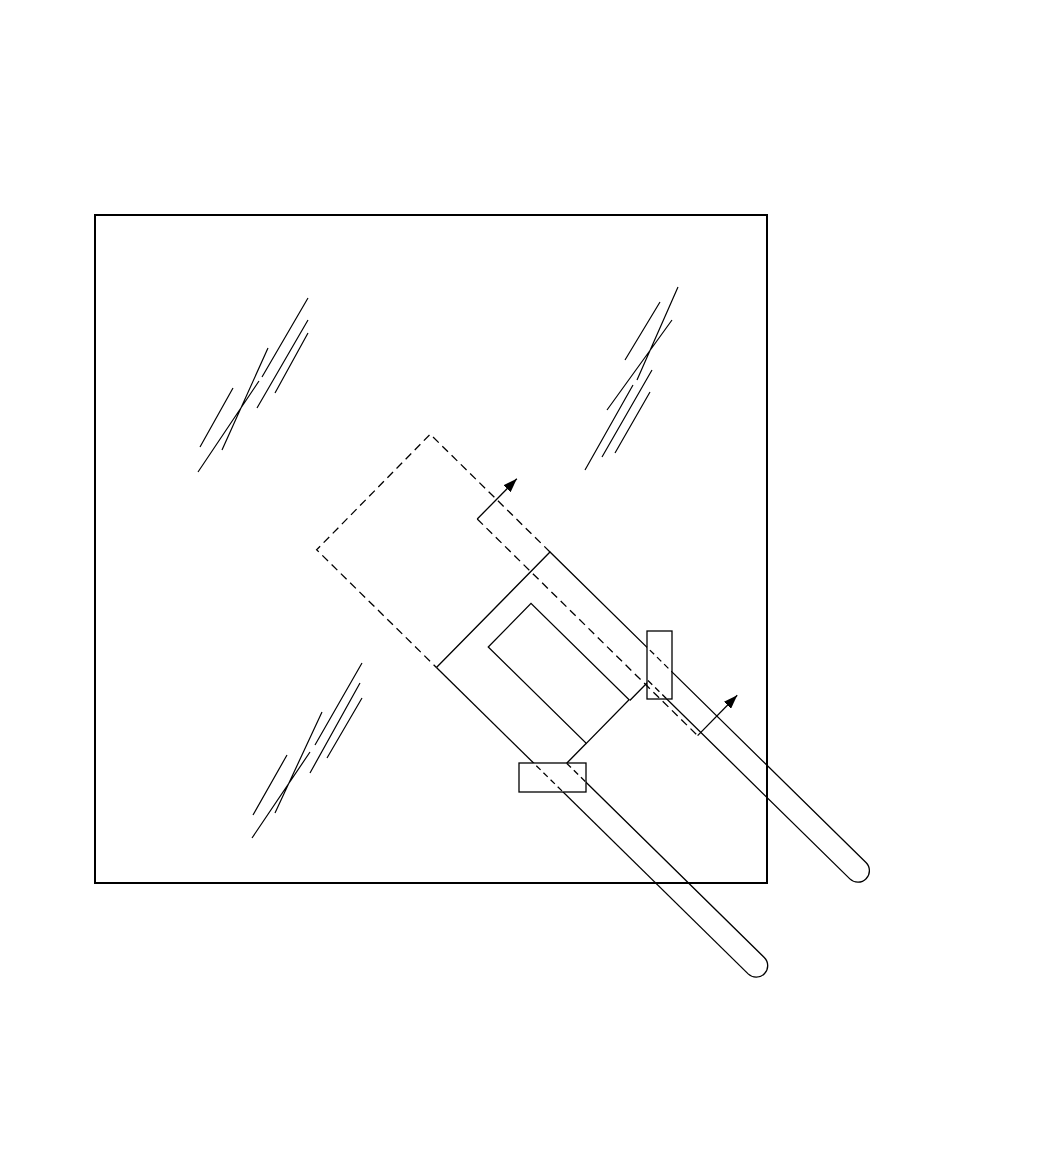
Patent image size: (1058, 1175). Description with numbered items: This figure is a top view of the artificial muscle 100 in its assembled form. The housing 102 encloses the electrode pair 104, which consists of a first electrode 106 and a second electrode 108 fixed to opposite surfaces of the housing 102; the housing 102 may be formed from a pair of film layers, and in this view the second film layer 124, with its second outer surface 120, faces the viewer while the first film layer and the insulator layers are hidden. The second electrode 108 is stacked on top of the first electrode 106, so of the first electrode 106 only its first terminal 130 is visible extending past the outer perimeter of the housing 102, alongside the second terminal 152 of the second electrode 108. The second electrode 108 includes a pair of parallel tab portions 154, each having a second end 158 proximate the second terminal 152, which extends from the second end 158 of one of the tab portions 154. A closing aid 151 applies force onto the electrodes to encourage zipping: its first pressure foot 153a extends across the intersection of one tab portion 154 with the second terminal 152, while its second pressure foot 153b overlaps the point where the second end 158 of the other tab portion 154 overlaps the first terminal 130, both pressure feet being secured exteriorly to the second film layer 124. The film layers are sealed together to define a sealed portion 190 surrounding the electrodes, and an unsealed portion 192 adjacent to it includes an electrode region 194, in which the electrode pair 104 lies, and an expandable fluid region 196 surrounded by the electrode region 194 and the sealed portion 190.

The artificial muscle 100 is at (115, 58).
The housing 102 is at (370, 183).
The electrode pair 104 is at (695, 945).
The first electrode 106 is at (648, 903).
The second electrode 108 is at (826, 790).
The second outer surface 120 is at (133, 222).
The second film layer 124 is at (292, 183).
The first terminal 130 is at (742, 975).
The closing aid 151 is at (680, 638).
The second terminal 152 is at (862, 855).
The first pressure foot 153a is at (673, 657).
The second pressure foot 153b is at (556, 793).
The tab portions 154 is at (617, 613).
The second end 158 is at (637, 700).
The sealed portion 190 is at (808, 508).
The unsealed portion 192 is at (448, 710).
The electrode region 194 is at (490, 745).
The expandable fluid region 196 is at (313, 572).